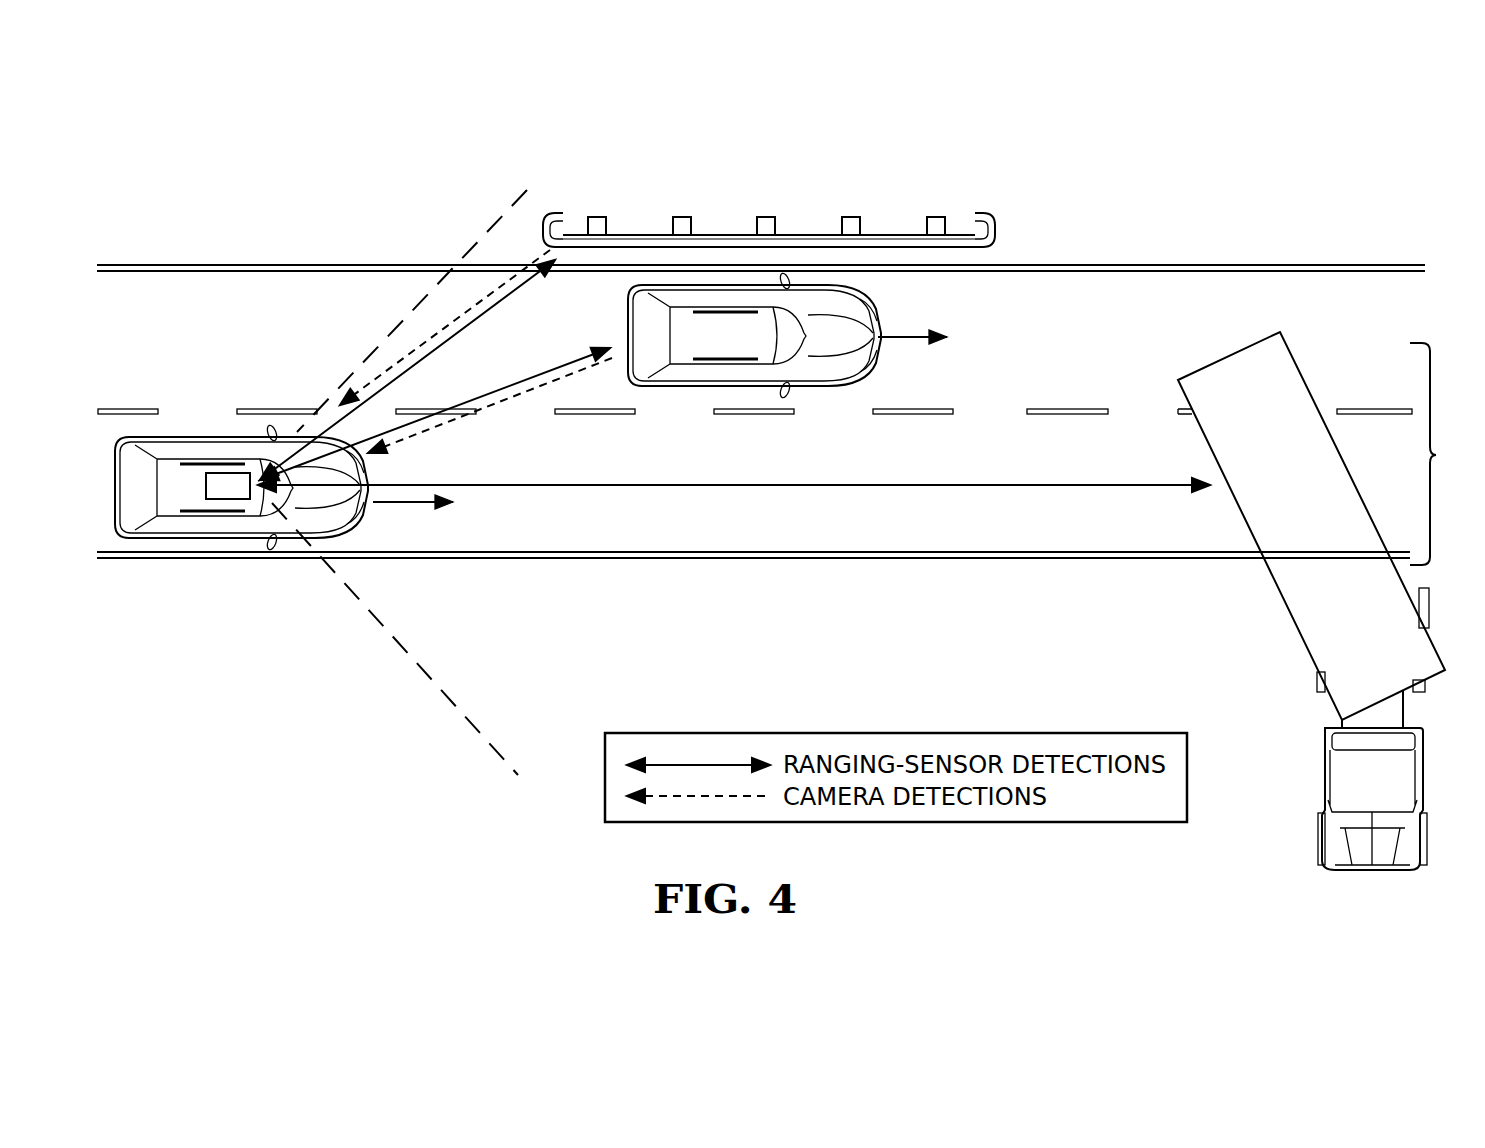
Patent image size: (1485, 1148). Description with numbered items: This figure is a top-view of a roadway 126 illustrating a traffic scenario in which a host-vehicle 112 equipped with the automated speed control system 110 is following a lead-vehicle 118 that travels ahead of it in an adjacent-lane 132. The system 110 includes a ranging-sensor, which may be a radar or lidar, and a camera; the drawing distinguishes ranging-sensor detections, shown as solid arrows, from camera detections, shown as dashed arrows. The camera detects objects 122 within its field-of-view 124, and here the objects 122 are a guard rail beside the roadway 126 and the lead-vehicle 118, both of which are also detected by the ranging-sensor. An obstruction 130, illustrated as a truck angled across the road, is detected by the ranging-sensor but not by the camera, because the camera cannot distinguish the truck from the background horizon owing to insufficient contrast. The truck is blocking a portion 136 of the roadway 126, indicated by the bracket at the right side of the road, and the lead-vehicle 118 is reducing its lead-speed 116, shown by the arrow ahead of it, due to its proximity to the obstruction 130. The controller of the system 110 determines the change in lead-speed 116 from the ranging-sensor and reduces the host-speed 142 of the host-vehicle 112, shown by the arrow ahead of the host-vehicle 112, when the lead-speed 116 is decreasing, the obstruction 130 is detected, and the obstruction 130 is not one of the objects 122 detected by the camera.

The automated speed control system 110 is at (220, 493).
The host-vehicle 112 is at (253, 437).
The lead-speed 116 is at (912, 340).
The lead-vehicle 118 is at (670, 285).
The objects 122 is at (770, 287).
The field-of-view 124 is at (473, 248).
The roadway 126 is at (178, 287).
The obstruction 130 is at (1280, 598).
The adjacent-lane 132 is at (1187, 310).
The portion 136 is at (1437, 455).
The host-speed 142 is at (415, 502).